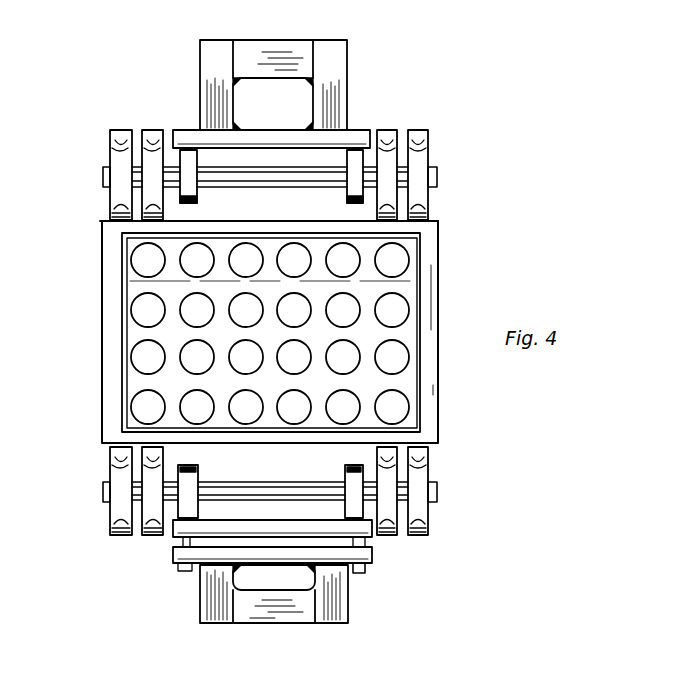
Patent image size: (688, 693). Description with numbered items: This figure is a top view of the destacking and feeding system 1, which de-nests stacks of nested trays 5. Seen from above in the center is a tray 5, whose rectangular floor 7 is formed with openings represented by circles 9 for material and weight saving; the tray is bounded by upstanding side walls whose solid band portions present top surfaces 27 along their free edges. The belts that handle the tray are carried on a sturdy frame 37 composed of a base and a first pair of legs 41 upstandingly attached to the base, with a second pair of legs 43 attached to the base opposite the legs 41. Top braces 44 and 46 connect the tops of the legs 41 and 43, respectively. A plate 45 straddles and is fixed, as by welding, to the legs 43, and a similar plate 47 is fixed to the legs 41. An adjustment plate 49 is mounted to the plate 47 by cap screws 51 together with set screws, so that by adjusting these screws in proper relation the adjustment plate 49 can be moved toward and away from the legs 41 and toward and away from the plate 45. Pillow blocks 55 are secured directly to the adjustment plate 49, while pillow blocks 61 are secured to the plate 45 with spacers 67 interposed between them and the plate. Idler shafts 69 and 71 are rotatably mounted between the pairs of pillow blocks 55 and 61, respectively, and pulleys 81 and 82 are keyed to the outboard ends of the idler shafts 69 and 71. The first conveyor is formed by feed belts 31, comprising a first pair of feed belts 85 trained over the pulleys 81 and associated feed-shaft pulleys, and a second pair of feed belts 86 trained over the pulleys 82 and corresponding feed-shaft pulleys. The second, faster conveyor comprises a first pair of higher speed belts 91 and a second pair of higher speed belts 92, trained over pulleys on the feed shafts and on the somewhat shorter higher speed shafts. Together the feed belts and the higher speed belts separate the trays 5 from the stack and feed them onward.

The destacking and feeding system 1 is at (126, 604).
The tray 5 is at (99, 297).
The floor 7 is at (135, 380).
The circles 9 is at (396, 264).
The top surfaces 27 is at (436, 392).
The feed belts 31 is at (100, 204).
The frame 37 is at (226, 636).
The first pair of legs 41 is at (200, 610).
The second pair of legs 43 is at (203, 40).
The top brace 44 is at (297, 608).
The plate 45 is at (273, 135).
The top brace 46 is at (248, 40).
The plate 47 is at (257, 552).
The adjustment plate 49 is at (343, 528).
The cap screws 51 is at (366, 570).
The pillow blocks 55 is at (343, 470).
The pillow blocks 61 is at (197, 200).
The spacers 67 is at (190, 148).
The idler shaft 69 is at (436, 490).
The idler shaft 71 is at (104, 181).
The pulleys 81 is at (112, 520).
The pulleys 82 is at (110, 150).
The first pair of feed belts 85 is at (122, 535).
The second pair of feed belts 86 is at (120, 130).
The first pair of higher speed belts 91 is at (155, 535).
The second pair of higher speed belts 92 is at (152, 130).